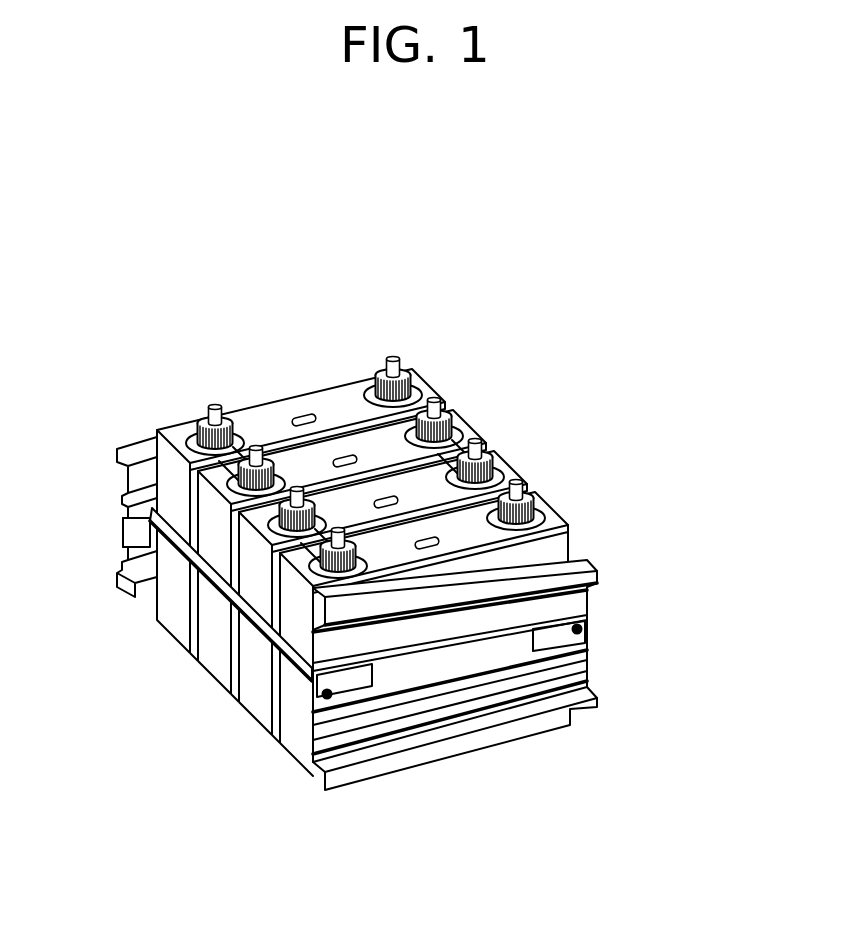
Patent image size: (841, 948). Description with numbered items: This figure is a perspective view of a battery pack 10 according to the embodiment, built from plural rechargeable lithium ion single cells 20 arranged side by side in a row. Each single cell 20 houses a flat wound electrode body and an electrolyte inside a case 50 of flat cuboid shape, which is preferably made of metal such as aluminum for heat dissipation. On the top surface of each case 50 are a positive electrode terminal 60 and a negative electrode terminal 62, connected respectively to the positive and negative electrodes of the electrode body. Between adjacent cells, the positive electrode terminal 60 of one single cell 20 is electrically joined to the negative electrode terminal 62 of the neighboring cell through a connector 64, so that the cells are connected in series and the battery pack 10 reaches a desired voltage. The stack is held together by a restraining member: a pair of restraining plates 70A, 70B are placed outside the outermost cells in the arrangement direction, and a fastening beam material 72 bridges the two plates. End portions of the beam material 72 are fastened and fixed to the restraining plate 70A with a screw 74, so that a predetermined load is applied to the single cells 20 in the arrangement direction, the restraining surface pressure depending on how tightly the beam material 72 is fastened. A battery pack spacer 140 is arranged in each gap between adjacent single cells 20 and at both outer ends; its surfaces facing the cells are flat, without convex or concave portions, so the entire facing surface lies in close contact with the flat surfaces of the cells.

The battery pack 10 is at (683, 284).
The single cell 20 is at (377, 596).
The case 50 is at (222, 670).
The positive electrode terminal 60 is at (213, 406).
The negative electrode terminal 62 is at (257, 447).
The connector 64 is at (235, 458).
The restraining plate 70A is at (492, 695).
The restraining plate 70B is at (130, 452).
The fastening beam material 72 is at (282, 662).
The screw 74 is at (582, 628).
The battery pack spacer 140 is at (383, 468).